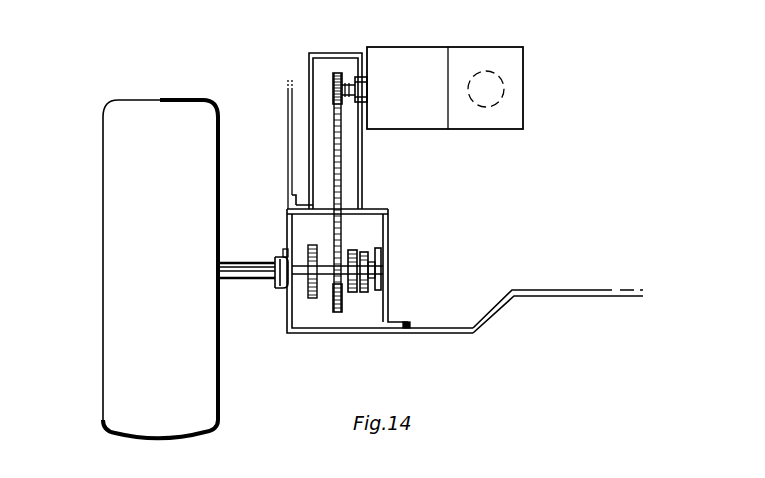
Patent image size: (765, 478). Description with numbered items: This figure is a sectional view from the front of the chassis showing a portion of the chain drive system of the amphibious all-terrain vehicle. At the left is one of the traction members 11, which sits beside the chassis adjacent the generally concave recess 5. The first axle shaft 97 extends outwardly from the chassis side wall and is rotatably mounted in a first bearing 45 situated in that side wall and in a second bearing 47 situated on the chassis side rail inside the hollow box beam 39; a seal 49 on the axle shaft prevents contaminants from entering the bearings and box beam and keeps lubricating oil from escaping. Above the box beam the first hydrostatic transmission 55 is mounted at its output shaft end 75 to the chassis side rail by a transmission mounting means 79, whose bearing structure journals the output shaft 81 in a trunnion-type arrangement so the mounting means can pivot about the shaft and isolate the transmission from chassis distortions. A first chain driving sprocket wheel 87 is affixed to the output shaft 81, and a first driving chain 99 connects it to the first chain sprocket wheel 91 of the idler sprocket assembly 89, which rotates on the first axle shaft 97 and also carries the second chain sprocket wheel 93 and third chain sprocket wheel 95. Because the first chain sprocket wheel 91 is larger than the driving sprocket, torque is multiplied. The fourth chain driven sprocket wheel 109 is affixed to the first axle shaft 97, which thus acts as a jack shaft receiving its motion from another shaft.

The generally concave recess 5 is at (555, 299).
The traction member 11 is at (121, 274).
The hollow box beam 39 is at (376, 237).
The first bearing 45 is at (283, 254).
The second bearing 47 is at (380, 266).
The seal 49 is at (272, 259).
The first hydrostatic transmission 55 is at (434, 58).
The output shaft end 75 is at (372, 44).
The transmission mounting means 79 is at (322, 93).
The output shaft 81 is at (350, 78).
The first chain driving sprocket wheel 87 is at (332, 77).
The idler sprocket assembly 89 is at (372, 214).
The first chain sprocket wheel 91 is at (338, 314).
The second chain sprocket wheel 93 is at (353, 294).
The third chain sprocket wheel 95 is at (364, 294).
The first axle shaft 97 is at (258, 281).
The first driving chain 99 is at (336, 141).
The fourth chain driven sprocket wheel 109 is at (313, 302).